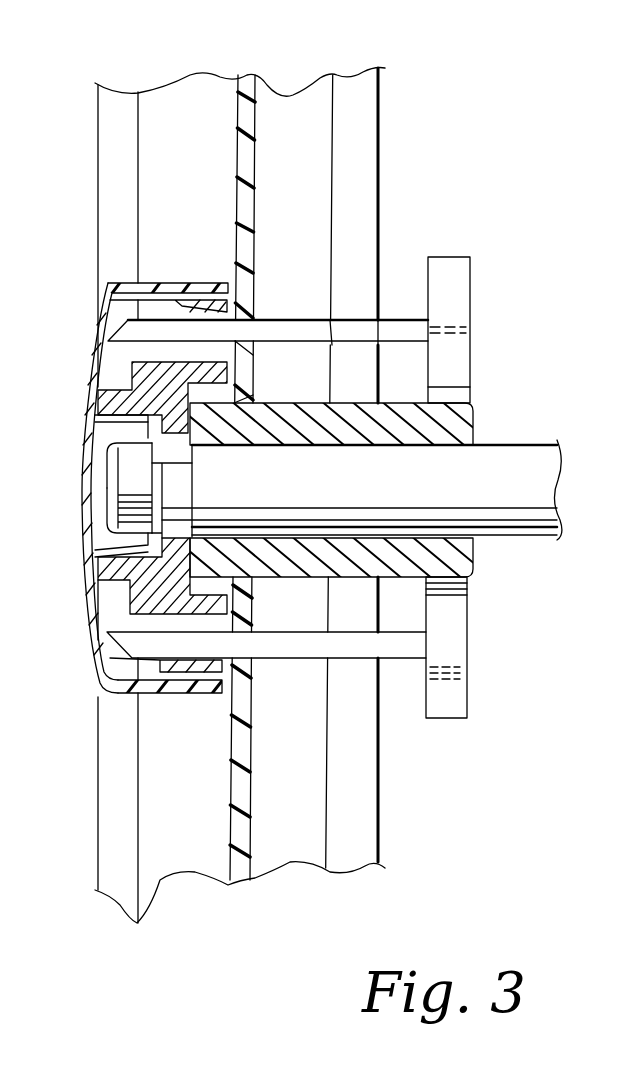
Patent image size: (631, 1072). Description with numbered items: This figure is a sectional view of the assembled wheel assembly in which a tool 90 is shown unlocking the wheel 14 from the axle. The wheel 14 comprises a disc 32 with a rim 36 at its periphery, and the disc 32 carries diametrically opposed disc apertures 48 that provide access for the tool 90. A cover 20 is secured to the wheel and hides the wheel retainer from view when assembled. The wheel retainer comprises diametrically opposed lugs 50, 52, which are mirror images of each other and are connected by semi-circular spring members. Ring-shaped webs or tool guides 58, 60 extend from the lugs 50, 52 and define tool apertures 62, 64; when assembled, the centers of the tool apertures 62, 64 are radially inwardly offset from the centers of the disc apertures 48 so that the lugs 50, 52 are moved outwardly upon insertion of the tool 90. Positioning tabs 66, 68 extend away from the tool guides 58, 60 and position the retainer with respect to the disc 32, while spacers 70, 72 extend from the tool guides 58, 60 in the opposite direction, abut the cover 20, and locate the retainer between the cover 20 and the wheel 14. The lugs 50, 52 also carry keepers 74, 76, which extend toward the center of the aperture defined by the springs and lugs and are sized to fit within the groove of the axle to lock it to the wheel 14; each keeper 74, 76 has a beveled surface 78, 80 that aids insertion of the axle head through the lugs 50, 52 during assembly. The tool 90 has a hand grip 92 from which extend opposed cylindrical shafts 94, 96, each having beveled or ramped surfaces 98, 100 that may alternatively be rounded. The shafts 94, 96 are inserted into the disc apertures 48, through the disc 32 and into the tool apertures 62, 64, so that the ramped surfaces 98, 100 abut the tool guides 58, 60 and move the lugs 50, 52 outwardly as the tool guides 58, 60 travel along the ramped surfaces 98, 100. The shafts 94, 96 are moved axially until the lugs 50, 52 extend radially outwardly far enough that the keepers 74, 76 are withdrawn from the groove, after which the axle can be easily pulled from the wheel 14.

The wheel 14 is at (262, 140).
The cover 20 is at (76, 470).
The disc 32 is at (262, 140).
The rim 36 is at (142, 157).
The disc apertures 48 is at (245, 348).
The lug 50 is at (183, 352).
The lug 52 is at (168, 622).
The tool guide 58 is at (170, 345).
The tool guide 60 is at (108, 685).
The tool aperture 62 is at (205, 342).
The tool aperture 64 is at (112, 650).
The positioning tab 66 is at (212, 372).
The positioning tab 68 is at (234, 603).
The spacer 70 is at (100, 403).
The spacer 72 is at (120, 600).
The keeper 74 is at (97, 433).
The keeper 76 is at (140, 545).
The beveled surface 78 is at (193, 458).
The beveled surface 80 is at (176, 540).
The tool 90 is at (506, 641).
The hand grip 92 is at (465, 292).
The cylindrical shaft 94 is at (363, 330).
The cylindrical shaft 96 is at (350, 650).
The ramped surface 98 is at (115, 320).
The ramped surface 100 is at (100, 675).